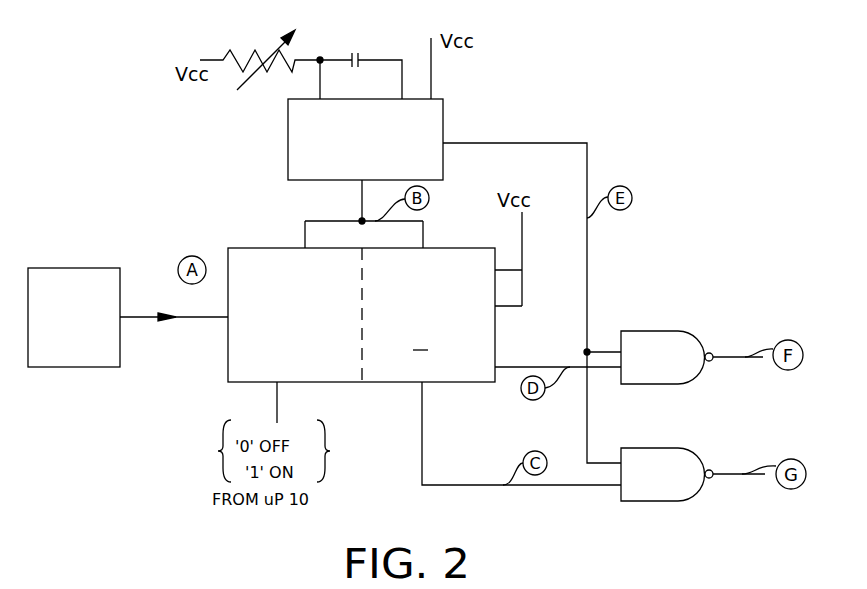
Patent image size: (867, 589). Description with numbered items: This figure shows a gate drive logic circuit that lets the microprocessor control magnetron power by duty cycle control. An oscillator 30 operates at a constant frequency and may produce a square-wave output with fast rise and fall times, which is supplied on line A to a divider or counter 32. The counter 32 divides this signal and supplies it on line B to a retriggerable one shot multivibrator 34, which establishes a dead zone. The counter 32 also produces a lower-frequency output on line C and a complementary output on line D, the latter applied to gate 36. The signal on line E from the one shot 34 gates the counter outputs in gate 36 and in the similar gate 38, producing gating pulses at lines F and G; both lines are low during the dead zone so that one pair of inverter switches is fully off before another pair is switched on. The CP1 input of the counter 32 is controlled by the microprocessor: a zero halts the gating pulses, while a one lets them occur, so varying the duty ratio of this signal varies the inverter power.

The oscillator 30 is at (73, 268).
The divider or counter 32 is at (290, 248).
The retriggerable one shot multivibrator 34 is at (443, 115).
The gate 36 is at (658, 331).
The gate 38 is at (650, 448).